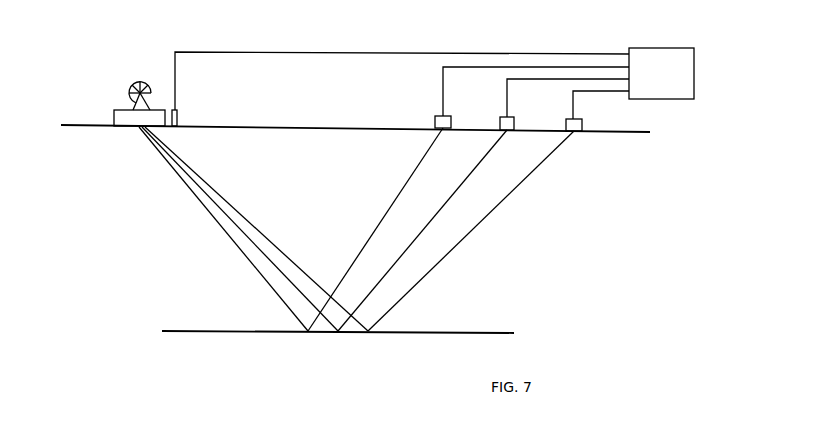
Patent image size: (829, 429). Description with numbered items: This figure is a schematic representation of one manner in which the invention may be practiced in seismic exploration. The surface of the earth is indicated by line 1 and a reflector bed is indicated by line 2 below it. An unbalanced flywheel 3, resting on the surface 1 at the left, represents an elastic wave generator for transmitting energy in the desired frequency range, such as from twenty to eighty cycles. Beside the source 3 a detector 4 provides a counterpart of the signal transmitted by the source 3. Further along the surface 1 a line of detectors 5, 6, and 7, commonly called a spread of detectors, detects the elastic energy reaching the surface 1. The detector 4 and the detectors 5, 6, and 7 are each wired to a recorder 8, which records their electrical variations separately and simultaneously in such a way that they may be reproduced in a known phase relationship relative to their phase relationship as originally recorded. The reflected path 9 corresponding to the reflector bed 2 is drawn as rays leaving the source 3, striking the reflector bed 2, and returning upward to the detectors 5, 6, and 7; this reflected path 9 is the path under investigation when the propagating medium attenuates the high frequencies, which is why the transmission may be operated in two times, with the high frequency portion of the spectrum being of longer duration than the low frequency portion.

The surface of the earth 1 is at (643, 130).
The reflector bed 2 is at (462, 332).
The unbalanced flywheel 3 is at (127, 103).
The detector 4 is at (178, 109).
The detector 5 is at (448, 115).
The detector 6 is at (512, 116).
The detector 7 is at (579, 117).
The recorder 8 is at (697, 82).
The reflected path 9 is at (250, 240).